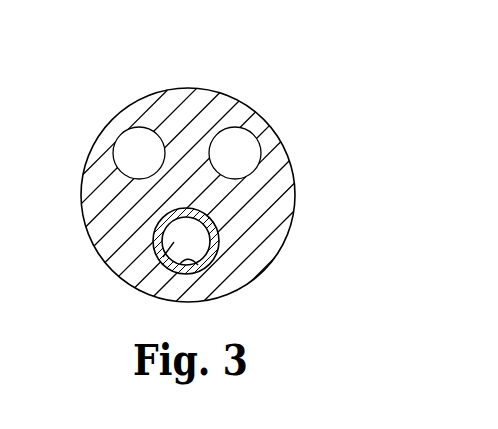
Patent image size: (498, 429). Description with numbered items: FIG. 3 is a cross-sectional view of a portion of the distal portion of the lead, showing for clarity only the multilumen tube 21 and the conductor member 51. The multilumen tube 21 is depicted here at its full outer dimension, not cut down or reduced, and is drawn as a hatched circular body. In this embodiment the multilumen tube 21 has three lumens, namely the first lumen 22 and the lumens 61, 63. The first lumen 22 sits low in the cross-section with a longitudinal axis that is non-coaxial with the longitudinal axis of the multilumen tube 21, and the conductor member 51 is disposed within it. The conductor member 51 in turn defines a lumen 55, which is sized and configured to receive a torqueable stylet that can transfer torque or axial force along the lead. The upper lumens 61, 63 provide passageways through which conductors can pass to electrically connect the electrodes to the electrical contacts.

The multilumen tube 21 is at (218, 104).
The first lumen 22 is at (177, 273).
The conductor member 51 is at (216, 253).
The lumen 55 is at (153, 254).
The lumen 61 is at (242, 150).
The lumen 63 is at (135, 148).